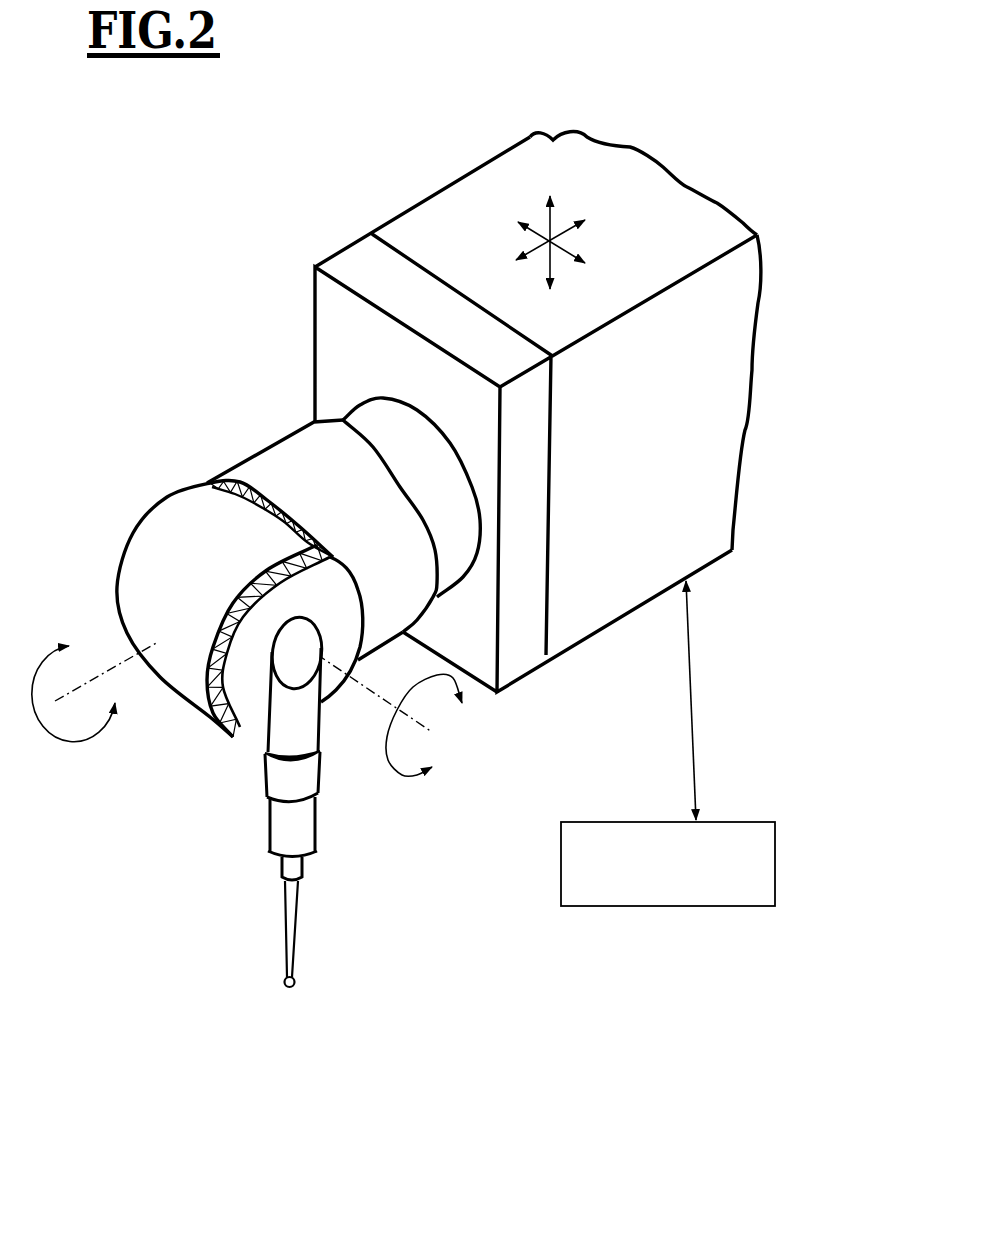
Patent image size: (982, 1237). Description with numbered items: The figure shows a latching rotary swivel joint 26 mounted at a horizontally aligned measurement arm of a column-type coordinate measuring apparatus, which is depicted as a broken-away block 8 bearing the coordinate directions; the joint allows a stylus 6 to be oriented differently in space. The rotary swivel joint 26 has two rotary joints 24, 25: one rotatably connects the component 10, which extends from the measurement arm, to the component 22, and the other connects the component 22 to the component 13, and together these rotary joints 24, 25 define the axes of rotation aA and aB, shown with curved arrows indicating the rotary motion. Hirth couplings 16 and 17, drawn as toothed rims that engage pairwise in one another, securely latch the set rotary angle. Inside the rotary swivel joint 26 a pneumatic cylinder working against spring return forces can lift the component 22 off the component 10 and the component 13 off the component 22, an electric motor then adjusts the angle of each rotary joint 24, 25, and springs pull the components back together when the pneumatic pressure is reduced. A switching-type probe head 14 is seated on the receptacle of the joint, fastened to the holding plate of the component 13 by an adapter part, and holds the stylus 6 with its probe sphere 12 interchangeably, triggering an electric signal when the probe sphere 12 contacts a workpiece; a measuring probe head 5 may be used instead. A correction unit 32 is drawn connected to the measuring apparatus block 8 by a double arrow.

The measuring probe head 5 is at (280, 723).
The stylus 6 is at (285, 918).
The coordinate measuring machine quill 8 is at (591, 596).
The component 10 is at (283, 458).
The probe sphere 12 is at (293, 985).
The component 13 is at (330, 688).
The switching-type probe head 14 is at (310, 828).
The Hirth coupling 16 is at (208, 717).
The Hirth coupling 17 is at (213, 483).
The component 22 is at (143, 532).
The rotary joint 24 is at (183, 727).
The rotary joint 25 is at (197, 433).
The rotary swivel joint 26 is at (115, 350).
The correction unit 32 is at (589, 904).
The axis of rotation aA is at (115, 665).
The axis of rotation aB is at (425, 730).